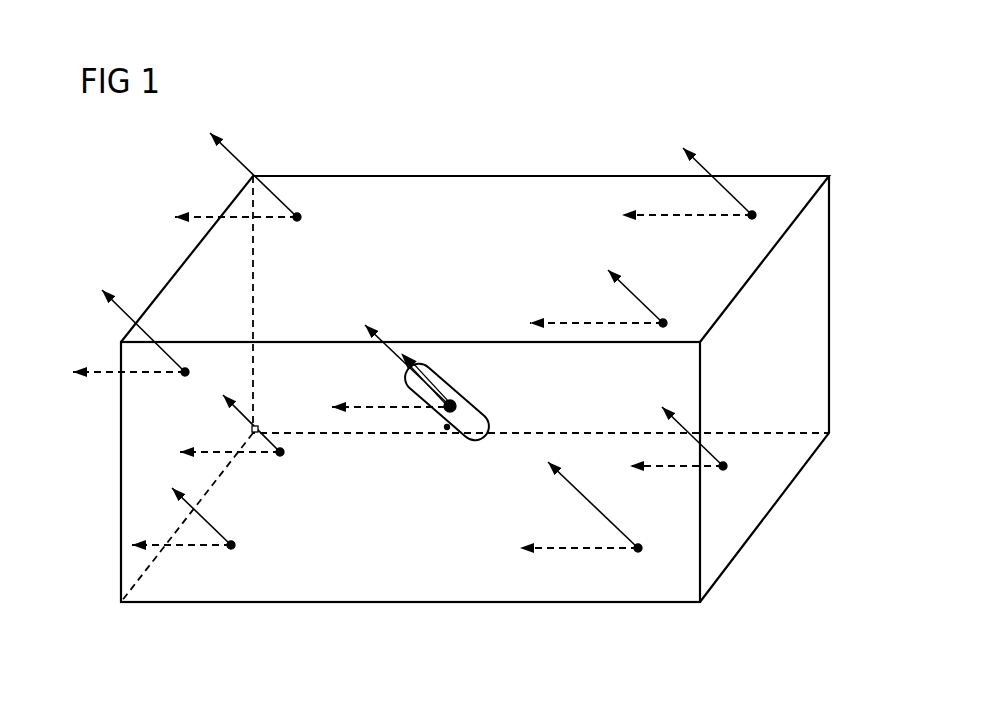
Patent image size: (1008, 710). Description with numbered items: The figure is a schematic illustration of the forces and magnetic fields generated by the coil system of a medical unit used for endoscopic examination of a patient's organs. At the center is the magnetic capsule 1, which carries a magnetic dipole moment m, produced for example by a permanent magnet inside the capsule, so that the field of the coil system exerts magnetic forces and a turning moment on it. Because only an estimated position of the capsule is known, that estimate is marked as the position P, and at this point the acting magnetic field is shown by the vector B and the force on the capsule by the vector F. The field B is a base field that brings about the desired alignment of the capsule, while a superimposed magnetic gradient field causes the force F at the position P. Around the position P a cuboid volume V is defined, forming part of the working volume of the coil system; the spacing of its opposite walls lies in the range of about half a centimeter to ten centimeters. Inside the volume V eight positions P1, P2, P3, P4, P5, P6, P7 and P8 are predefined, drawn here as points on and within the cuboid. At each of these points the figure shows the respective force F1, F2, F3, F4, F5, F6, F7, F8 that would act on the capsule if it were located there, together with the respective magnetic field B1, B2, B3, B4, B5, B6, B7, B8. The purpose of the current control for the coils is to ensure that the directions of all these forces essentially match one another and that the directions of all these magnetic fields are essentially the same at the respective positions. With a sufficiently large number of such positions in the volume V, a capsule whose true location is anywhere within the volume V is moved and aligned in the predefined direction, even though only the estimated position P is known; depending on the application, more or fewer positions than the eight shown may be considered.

The volume V is at (488, 185).
The magnetic capsule 1 is at (482, 415).
The magnetic dipole moment m is at (450, 387).
The estimated position of the capsule P is at (447, 427).
The magnetic field B is at (375, 330).
The force F is at (360, 405).
The magnetic field at position P1 B1 is at (205, 520).
The force at position P1 F1 is at (185, 548).
The predefined position P1 is at (233, 547).
The magnetic field at position P2 B2 is at (575, 488).
The force at position P2 F2 is at (555, 545).
The predefined position P2 is at (640, 550).
The magnetic field at position P3 B3 is at (258, 427).
The force at position P3 F3 is at (278, 457).
The predefined position P3 is at (282, 454).
The magnetic field at position P4 B4 is at (666, 408).
The force at position P4 F4 is at (668, 470).
The predefined position P4 is at (725, 468).
The magnetic field at position P5 B5 is at (148, 332).
The force at position P5 F5 is at (106, 370).
The predefined position P5 is at (185, 375).
The magnetic field at position P6 B6 is at (633, 290).
The force at position P6 F6 is at (580, 320).
The predefined position P6 is at (665, 321).
The magnetic field at position P7 B7 is at (238, 160).
The force at position P7 F7 is at (210, 213).
The predefined position P7 is at (300, 220).
The magnetic field at position P8 B8 is at (700, 160).
The force at position P8 F8 is at (628, 218).
The predefined position P8 is at (752, 218).